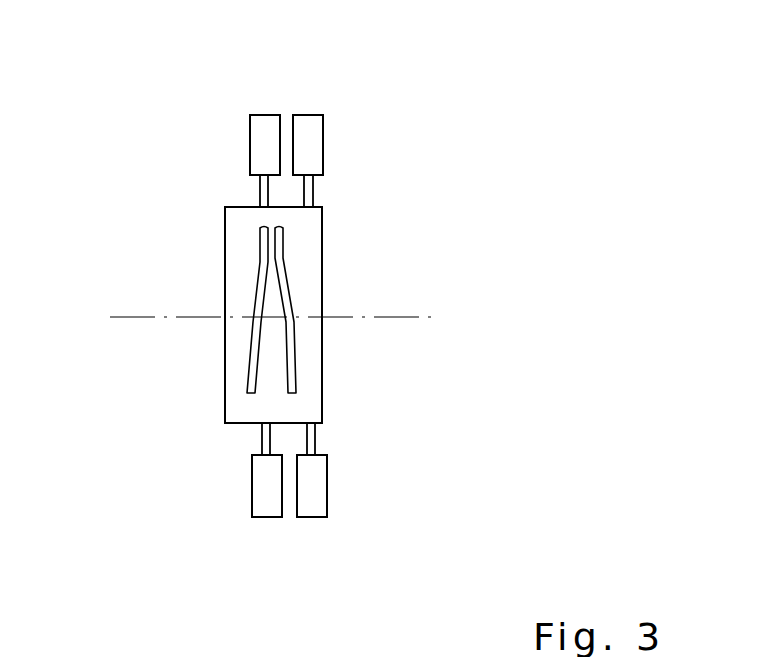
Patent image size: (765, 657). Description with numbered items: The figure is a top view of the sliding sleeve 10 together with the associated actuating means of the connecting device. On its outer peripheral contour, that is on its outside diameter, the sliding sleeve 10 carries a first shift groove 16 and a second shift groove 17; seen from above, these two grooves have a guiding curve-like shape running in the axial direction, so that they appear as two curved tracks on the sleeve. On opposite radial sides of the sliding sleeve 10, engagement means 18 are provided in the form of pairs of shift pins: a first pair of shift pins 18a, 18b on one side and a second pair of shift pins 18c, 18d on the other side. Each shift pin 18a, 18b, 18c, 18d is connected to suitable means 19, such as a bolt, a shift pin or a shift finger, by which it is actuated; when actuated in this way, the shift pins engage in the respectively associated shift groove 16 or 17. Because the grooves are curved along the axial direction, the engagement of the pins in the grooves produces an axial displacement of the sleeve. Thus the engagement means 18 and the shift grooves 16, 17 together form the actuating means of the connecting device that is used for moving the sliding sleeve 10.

The sliding sleeve 10 is at (241, 410).
The first shift groove 16 is at (258, 298).
The second shift groove 17 is at (288, 307).
The engagement means 18 is at (283, 106).
The shift pin 18a is at (262, 143).
The shift pin 18b is at (308, 142).
The shift pin 18c is at (268, 502).
The shift pin 18d is at (308, 501).
The actuating means 19 is at (260, 191).